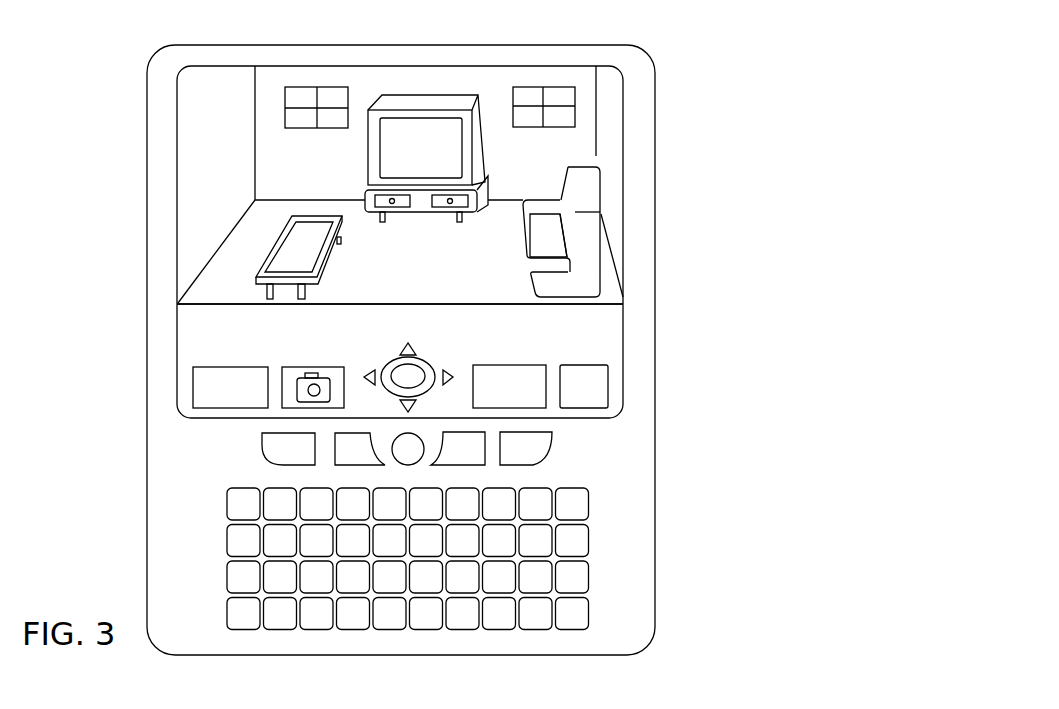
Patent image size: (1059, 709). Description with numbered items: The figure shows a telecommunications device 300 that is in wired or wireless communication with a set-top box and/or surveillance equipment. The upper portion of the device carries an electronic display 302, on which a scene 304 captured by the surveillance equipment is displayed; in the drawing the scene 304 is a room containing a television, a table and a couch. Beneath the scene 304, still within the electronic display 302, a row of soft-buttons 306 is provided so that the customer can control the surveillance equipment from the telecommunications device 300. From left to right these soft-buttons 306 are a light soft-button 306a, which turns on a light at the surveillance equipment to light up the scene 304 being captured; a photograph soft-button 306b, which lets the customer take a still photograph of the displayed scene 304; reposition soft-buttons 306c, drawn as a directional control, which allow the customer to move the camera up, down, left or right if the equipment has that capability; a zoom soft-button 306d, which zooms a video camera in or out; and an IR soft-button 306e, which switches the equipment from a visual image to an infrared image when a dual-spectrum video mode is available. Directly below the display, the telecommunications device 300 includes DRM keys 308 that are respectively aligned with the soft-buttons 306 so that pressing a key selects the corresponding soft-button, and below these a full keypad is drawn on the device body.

The telecommunications device 300 is at (693, 91).
The electronic display 302 is at (176, 165).
The scene 304 is at (270, 160).
The soft-buttons 306 is at (349, 358).
The light soft-button 306a is at (229, 367).
The photograph soft-button 306b is at (311, 367).
The reposition soft-buttons 306c is at (424, 356).
The zoom soft-button 306d is at (511, 365).
The IR soft-button 306e is at (586, 365).
The DRM keys 308 is at (236, 457).